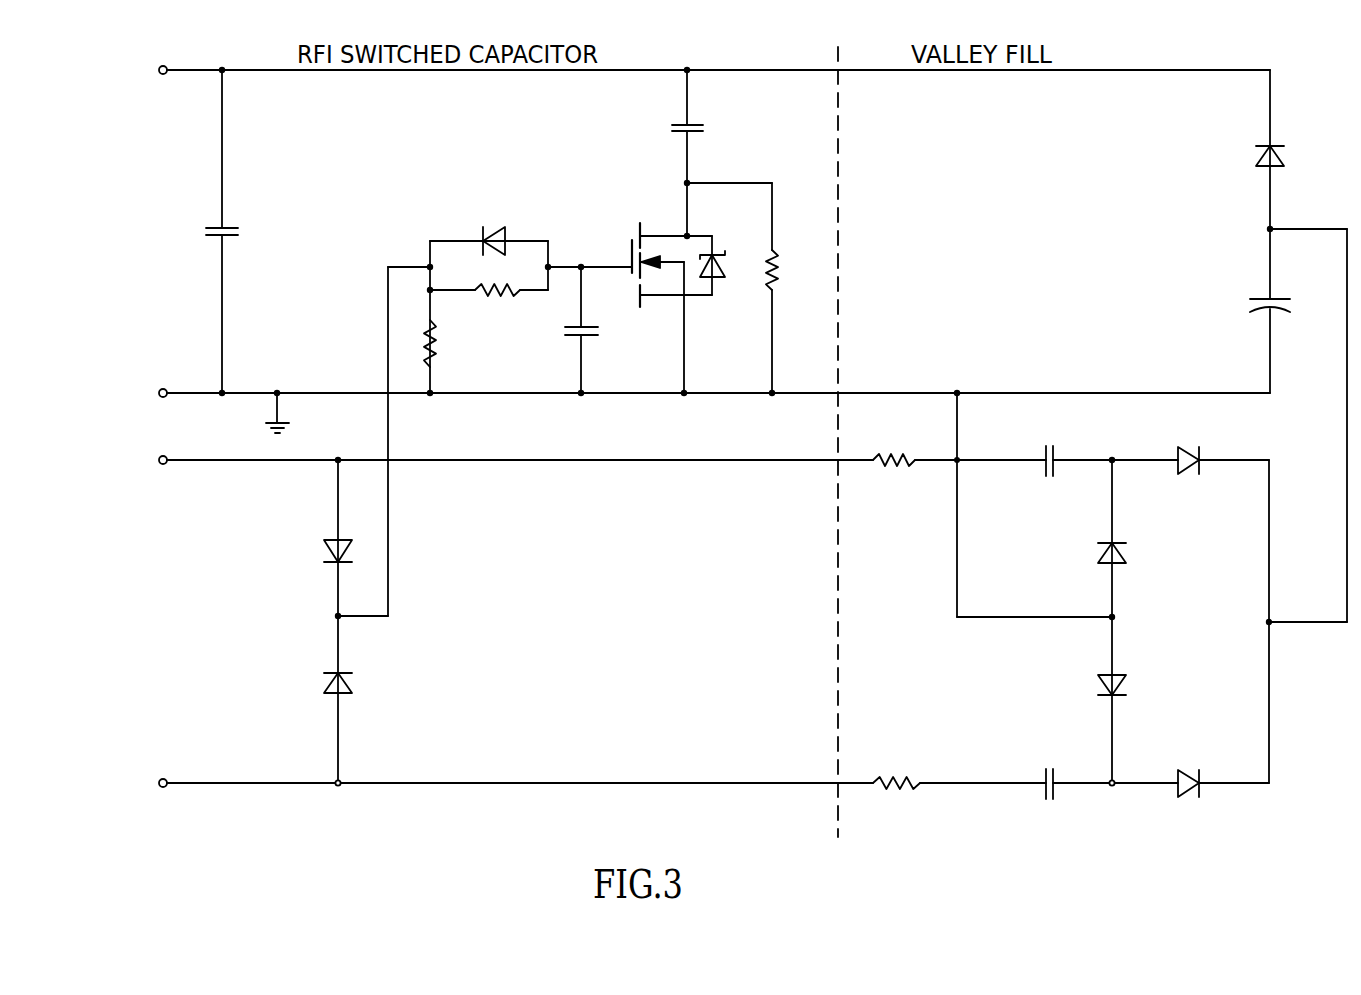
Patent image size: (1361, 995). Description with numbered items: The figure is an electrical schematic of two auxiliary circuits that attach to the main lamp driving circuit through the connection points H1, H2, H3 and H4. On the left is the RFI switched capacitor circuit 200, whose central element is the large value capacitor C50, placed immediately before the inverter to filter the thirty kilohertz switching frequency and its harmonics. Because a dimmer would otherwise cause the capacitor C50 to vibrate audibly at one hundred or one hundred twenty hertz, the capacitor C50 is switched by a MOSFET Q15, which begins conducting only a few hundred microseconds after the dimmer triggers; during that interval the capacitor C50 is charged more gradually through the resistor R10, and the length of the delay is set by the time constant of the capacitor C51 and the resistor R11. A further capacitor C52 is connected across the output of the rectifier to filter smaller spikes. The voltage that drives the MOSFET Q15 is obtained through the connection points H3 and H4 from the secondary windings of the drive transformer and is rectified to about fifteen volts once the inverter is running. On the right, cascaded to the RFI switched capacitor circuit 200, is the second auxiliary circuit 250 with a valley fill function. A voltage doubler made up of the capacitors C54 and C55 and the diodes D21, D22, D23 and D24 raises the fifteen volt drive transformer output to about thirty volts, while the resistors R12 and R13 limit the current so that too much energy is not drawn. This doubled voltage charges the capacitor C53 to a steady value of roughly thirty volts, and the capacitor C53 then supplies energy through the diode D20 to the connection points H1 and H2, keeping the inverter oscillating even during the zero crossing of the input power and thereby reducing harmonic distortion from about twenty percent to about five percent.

The RFI switched capacitor circuit 200 is at (532, 800).
The second auxiliary circuit having a valley fill function 250 is at (1007, 820).
The connection point H1 is at (145, 70).
The connection point H2 is at (142, 393).
The connection point H3 is at (142, 783).
The connection point H4 is at (142, 460).
The large value capacitor C50 is at (704, 151).
The capacitor C51 is at (597, 330).
The capacitor C52 is at (238, 231).
The capacitor C53 is at (1285, 311).
The capacitor C54 is at (1053, 770).
The capacitor C55 is at (1051, 449).
The resistor R10 is at (756, 289).
The resistor R11 is at (489, 302).
The resistor R12 is at (900, 769).
The resistor R13 is at (900, 446).
The MOSFET Q15 is at (687, 272).
The diode D20 is at (1289, 149).
The diode D21 is at (1130, 698).
The diode D22 is at (1130, 539).
The diode D23 is at (1195, 769).
The diode D24 is at (1195, 448).